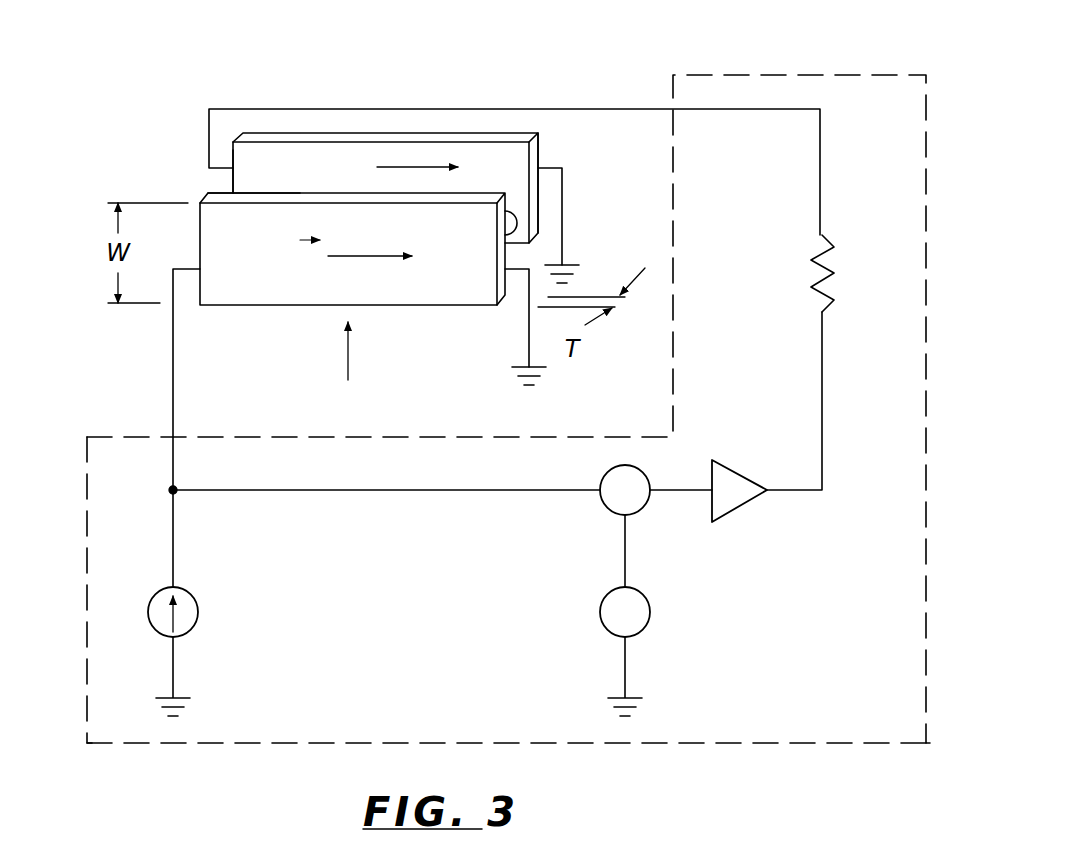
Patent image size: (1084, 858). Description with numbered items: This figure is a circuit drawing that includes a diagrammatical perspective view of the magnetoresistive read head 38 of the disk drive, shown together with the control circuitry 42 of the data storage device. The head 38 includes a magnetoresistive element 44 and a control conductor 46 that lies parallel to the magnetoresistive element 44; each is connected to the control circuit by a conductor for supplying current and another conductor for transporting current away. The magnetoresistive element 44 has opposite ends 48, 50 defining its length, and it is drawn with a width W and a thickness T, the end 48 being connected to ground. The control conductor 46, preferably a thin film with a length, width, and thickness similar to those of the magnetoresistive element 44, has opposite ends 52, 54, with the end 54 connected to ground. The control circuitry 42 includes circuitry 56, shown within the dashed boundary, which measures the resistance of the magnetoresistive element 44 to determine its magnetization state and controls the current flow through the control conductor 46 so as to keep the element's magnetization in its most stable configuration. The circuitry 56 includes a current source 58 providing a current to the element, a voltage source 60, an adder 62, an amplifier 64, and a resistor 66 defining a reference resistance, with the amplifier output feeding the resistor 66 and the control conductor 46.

The magnetoresistive read head 38 is at (421, 80).
The control circuitry 42 is at (684, 44).
The magnetoresistive element 44 is at (237, 275).
The control conductor 46 is at (280, 168).
The end of magnetoresistive element 48 is at (500, 231).
The end of magnetoresistive element 50 is at (207, 197).
The end of control conductor 52 is at (233, 185).
The end of control conductor 54 is at (538, 152).
The circuitry 56 is at (758, 745).
The current source 58 is at (195, 596).
The voltage source 60 is at (608, 628).
The adder 62 is at (608, 512).
The amplifier 64 is at (742, 505).
The resistor 66 is at (787, 305).